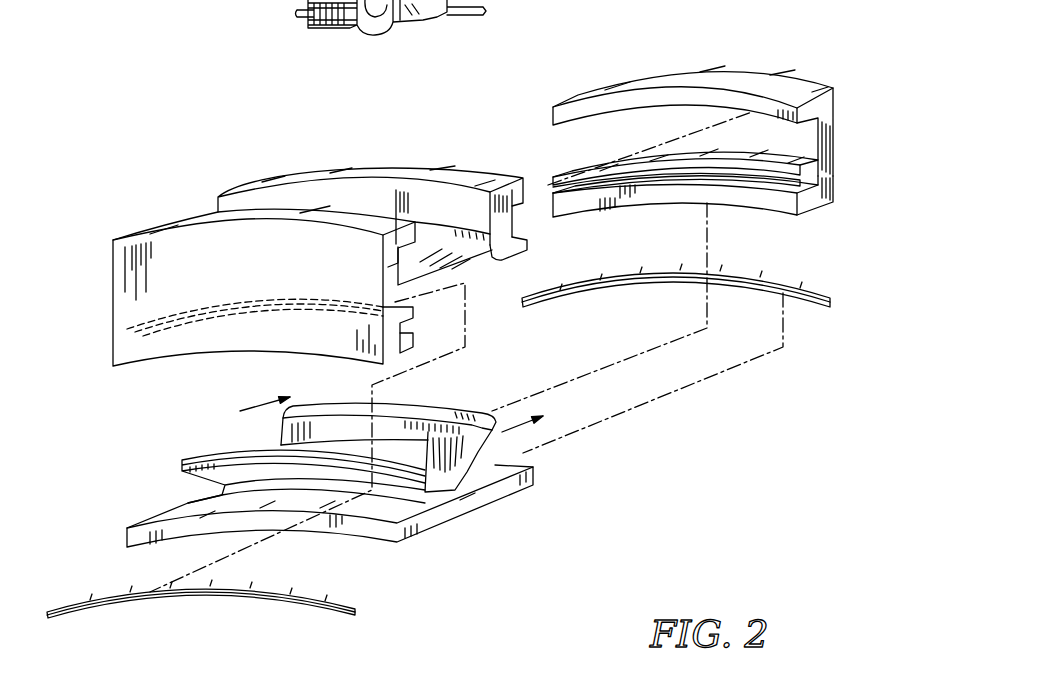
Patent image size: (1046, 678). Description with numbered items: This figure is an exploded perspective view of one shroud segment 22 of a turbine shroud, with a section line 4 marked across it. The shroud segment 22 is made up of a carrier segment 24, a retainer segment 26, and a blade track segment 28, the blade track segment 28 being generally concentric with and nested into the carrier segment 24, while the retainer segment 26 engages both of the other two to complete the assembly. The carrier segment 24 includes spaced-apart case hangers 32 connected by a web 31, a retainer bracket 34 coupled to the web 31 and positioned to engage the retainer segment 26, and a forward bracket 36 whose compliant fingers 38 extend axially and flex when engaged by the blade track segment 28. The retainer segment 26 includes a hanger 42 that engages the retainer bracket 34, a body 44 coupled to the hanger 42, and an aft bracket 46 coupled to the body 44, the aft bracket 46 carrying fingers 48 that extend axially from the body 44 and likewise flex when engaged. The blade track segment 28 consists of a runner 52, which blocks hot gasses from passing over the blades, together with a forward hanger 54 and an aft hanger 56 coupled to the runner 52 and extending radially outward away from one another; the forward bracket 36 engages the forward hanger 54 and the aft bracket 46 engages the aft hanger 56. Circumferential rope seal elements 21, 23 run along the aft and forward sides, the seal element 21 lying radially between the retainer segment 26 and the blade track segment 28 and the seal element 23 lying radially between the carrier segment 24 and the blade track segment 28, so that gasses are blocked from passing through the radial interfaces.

The section line 4- 4 is at (381, 421).
The seal element 21 is at (802, 300).
The shroud segment 22 is at (113, 157).
The seal element 23 is at (343, 605).
The carrier segment 24 is at (197, 203).
The retainer segment 26 is at (800, 78).
The blade track segment 28 is at (537, 477).
The web 31 is at (458, 263).
The case hangers 32 is at (503, 187).
The retainer bracket 34 is at (522, 247).
The forward bracket 36 is at (393, 360).
The fingers 38 is at (420, 323).
The hanger 42 is at (687, 87).
The body 44 is at (833, 153).
The aft bracket 46 is at (833, 187).
The fingers 48 is at (740, 177).
The runner 52 is at (470, 500).
The forward hanger 54 is at (327, 463).
The aft hanger 56 is at (467, 405).